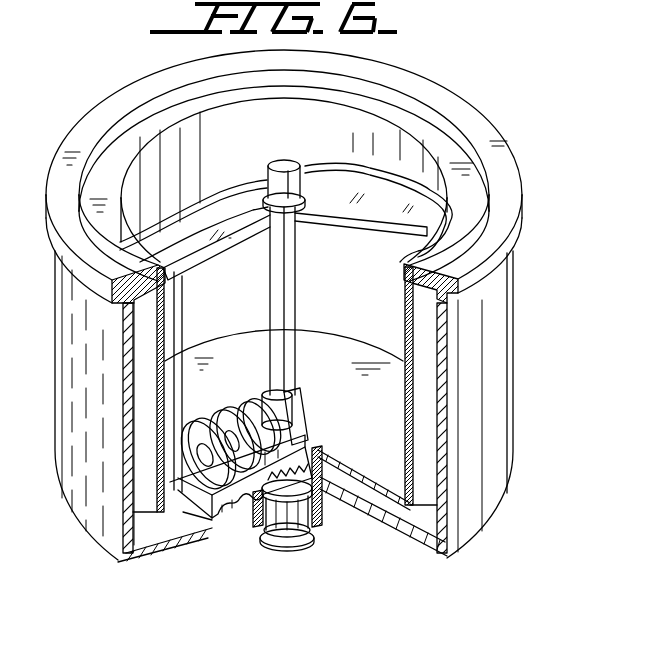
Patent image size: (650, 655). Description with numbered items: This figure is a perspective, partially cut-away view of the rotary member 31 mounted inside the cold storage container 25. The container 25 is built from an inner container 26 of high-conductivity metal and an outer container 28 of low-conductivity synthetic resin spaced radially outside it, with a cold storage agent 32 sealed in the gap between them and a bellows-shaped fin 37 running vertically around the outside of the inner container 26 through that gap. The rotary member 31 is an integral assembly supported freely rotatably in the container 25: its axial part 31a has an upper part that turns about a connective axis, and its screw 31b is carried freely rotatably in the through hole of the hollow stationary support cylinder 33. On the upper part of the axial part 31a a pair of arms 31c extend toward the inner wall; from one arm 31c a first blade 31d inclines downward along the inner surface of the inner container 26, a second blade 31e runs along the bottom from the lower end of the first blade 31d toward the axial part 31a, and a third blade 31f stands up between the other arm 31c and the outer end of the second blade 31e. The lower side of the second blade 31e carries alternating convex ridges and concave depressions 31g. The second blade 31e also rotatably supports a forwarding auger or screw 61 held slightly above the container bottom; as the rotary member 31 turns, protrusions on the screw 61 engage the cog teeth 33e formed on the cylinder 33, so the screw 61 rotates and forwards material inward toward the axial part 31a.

The cold storage container 25 is at (521, 310).
The inner container 26 is at (405, 320).
The outer container 28 is at (446, 352).
The rotary member 31 is at (302, 268).
The axial part 31a is at (297, 306).
The screw 31b is at (278, 548).
The arms 31c is at (236, 220).
The first blade 31d is at (313, 224).
The second blade 31e is at (213, 528).
The third blade 31f is at (183, 333).
The convex ridges and concave depressions 31g is at (246, 504).
The cold storage agent 32 is at (143, 525).
The cylinder 33 is at (326, 500).
The cog teeth 33e is at (318, 410).
The bellows-shaped fin 37 is at (145, 374).
The forwarding auger or screw 61 is at (242, 406).